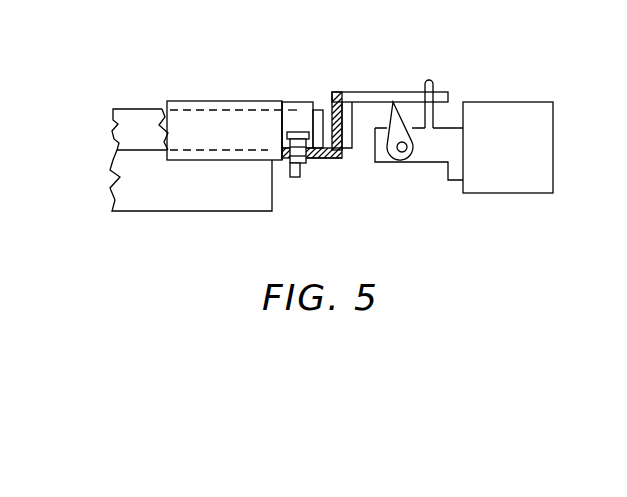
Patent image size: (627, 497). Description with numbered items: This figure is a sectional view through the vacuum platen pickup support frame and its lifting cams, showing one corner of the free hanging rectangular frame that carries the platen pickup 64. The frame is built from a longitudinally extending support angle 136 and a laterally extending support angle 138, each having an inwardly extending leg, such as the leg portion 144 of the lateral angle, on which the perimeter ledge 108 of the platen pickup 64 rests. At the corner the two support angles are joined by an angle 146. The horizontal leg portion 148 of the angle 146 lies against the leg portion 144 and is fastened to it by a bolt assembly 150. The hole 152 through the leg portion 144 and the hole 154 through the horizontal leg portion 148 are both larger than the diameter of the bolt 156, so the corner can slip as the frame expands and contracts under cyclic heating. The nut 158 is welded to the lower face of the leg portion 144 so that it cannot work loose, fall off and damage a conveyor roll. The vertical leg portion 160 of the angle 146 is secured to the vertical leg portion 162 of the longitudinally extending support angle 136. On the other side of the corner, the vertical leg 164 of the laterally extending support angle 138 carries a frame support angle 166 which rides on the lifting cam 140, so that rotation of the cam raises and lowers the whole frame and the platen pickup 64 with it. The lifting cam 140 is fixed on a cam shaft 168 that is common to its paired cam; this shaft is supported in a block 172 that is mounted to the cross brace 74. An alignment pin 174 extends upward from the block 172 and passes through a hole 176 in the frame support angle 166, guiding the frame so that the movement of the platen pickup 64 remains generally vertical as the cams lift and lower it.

The platen pickup 64 is at (158, 214).
The cross brace 74 is at (553, 115).
The perimeter ledge 108 is at (137, 150).
The longitudinally extending support angle 136 is at (185, 101).
The laterally extending support angle 138 is at (343, 91).
The lifting cam 140 is at (418, 142).
The leg portion 144 is at (282, 157).
The angle 146 is at (296, 102).
The horizontal leg portion 148 is at (288, 146).
The bolt assembly 150 is at (300, 207).
The hole 152 is at (310, 163).
The hole 154 is at (325, 158).
The bolt 156 is at (293, 132).
The nut 158 is at (289, 168).
The vertical leg portion 160 is at (282, 122).
The vertical leg portion 162 is at (160, 123).
The vertical leg 164 is at (332, 91).
The frame support angle 166 is at (446, 92).
The cam shaft 168 is at (405, 153).
The block 172 is at (461, 181).
The alignment pin 174 is at (437, 112).
The hole 176 is at (420, 95).